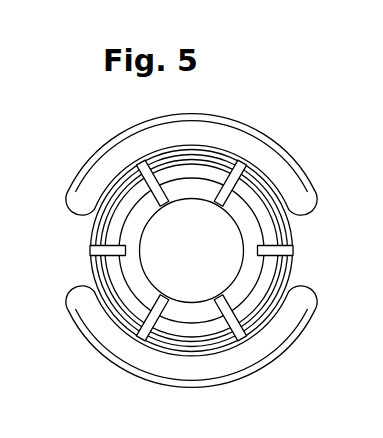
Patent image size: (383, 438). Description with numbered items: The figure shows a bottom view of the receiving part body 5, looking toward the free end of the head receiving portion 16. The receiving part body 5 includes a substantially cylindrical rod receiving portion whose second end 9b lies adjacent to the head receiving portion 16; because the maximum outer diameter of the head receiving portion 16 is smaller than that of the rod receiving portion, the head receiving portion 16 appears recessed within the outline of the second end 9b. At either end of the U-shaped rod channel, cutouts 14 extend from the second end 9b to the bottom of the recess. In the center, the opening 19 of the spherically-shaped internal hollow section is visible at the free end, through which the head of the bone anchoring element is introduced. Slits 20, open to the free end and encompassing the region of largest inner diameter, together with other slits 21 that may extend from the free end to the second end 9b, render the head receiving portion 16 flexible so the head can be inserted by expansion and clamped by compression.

The receiving part body 5 is at (194, 228).
The second end 9b is at (200, 131).
The cutouts 14 is at (78, 214).
The head receiving portion 16 is at (135, 310).
The opening 19 is at (234, 270).
The slits 20 is at (291, 251).
The slits 21 is at (240, 334).